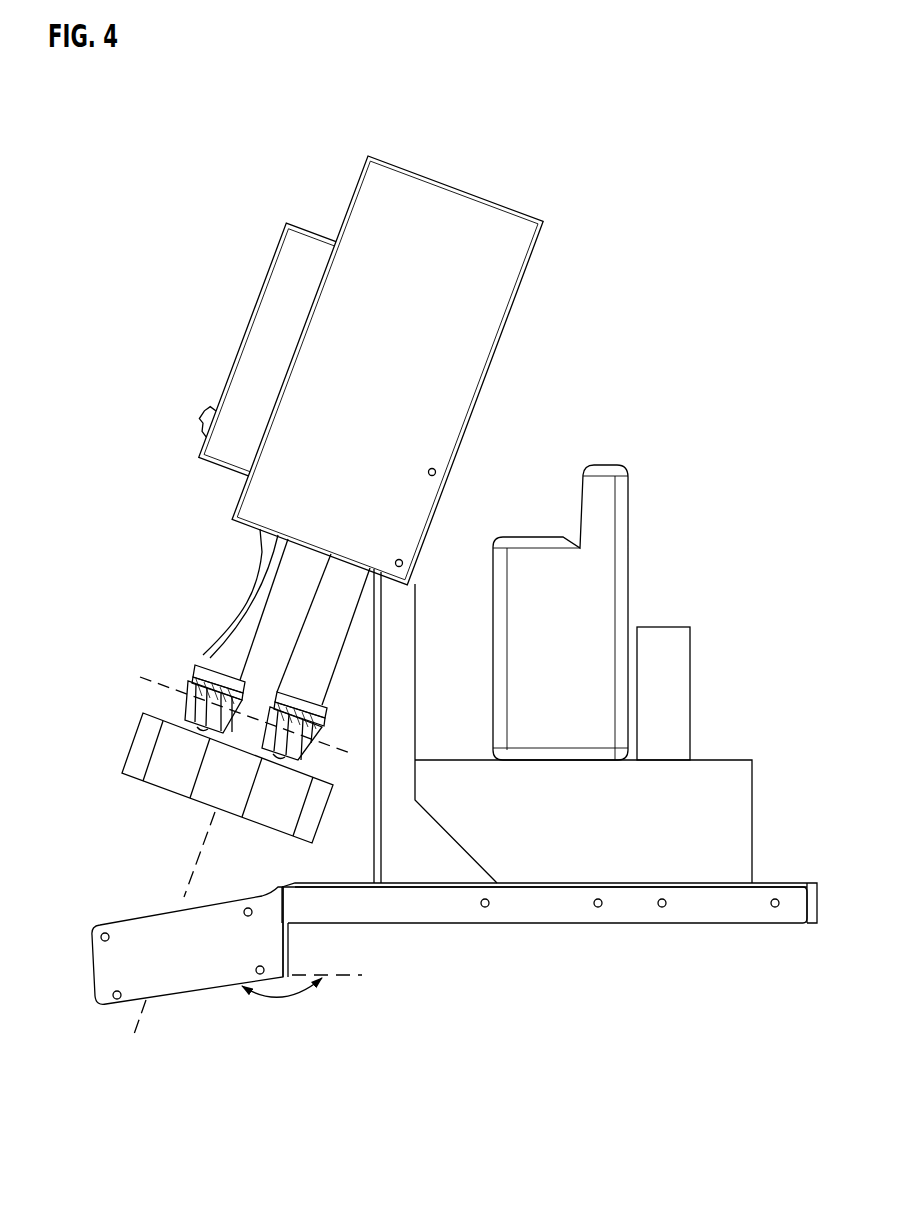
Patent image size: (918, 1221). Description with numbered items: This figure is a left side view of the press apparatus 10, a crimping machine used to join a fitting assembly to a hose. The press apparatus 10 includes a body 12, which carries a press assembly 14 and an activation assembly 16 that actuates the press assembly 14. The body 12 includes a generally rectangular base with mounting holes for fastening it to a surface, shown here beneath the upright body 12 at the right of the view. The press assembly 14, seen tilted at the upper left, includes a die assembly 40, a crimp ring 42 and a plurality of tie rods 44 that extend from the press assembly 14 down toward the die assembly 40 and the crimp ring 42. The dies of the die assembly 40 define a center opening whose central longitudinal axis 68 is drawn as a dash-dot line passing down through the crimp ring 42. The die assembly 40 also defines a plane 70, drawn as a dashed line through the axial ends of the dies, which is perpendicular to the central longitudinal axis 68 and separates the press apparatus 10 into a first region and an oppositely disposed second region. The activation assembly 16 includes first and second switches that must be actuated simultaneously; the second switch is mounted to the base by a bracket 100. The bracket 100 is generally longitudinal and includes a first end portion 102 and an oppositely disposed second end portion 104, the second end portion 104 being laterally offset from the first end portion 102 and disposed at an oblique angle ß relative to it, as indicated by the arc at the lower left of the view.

The press apparatus 10 is at (107, 233).
The body 12 is at (604, 410).
The press assembly 14 is at (175, 525).
The activation assembly 16 is at (396, 980).
The die assembly 40 is at (183, 678).
The crimp ring 42 is at (330, 821).
The tie rods 44 is at (318, 613).
The central longitudinal axis 68 is at (210, 870).
The plane 70 is at (137, 678).
The bracket 100 is at (535, 916).
The first end portion 102 is at (713, 903).
The second end portion 104 is at (187, 945).